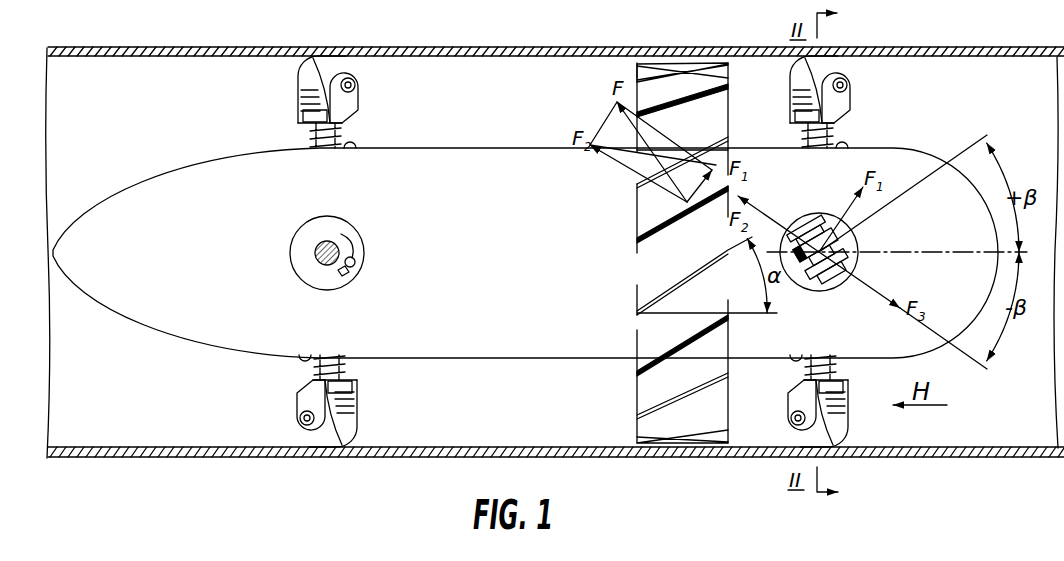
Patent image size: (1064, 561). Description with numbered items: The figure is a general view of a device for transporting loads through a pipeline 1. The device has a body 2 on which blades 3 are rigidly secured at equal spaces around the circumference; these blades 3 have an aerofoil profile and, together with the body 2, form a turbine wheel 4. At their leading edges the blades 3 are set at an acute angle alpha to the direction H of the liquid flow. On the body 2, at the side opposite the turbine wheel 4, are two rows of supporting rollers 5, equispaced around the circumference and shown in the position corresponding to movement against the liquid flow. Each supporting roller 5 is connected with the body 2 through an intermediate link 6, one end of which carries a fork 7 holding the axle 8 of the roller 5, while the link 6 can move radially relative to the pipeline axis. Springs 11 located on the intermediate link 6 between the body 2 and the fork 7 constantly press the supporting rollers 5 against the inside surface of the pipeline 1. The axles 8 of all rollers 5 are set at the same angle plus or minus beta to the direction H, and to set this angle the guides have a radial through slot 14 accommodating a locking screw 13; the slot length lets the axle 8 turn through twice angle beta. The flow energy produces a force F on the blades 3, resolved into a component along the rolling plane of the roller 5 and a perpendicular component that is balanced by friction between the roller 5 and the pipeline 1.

The pipeline 1 is at (149, 47).
The body 2 is at (247, 163).
The blades 3 is at (703, 121).
The turbine wheel 4 is at (731, 76).
The supporting rollers 5 is at (348, 423).
The intermediate link 6 is at (343, 133).
The fork 7 is at (345, 107).
The axle 8 is at (793, 231).
The springs 11 is at (317, 370).
The locking screw 13 is at (357, 264).
The radial through slot 14 is at (352, 242).